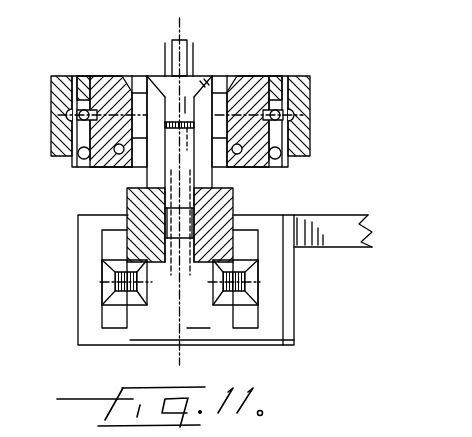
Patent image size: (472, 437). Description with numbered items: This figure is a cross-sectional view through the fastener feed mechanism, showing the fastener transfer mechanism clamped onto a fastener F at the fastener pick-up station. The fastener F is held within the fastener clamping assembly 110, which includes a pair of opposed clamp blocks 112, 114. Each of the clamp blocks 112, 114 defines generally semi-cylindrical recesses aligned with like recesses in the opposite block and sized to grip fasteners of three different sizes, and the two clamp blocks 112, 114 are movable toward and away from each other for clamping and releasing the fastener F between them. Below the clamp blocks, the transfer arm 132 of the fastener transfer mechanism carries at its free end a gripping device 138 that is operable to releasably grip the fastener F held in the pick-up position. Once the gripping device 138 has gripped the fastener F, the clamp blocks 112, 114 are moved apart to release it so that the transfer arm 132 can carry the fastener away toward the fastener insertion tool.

The fastener clamping assembly 110 is at (298, 62).
The clamp block 112 is at (102, 78).
The clamp block 114 is at (251, 88).
The transfer arm 132 is at (337, 231).
The gripping device 138 is at (302, 316).
The fastener F is at (168, 173).